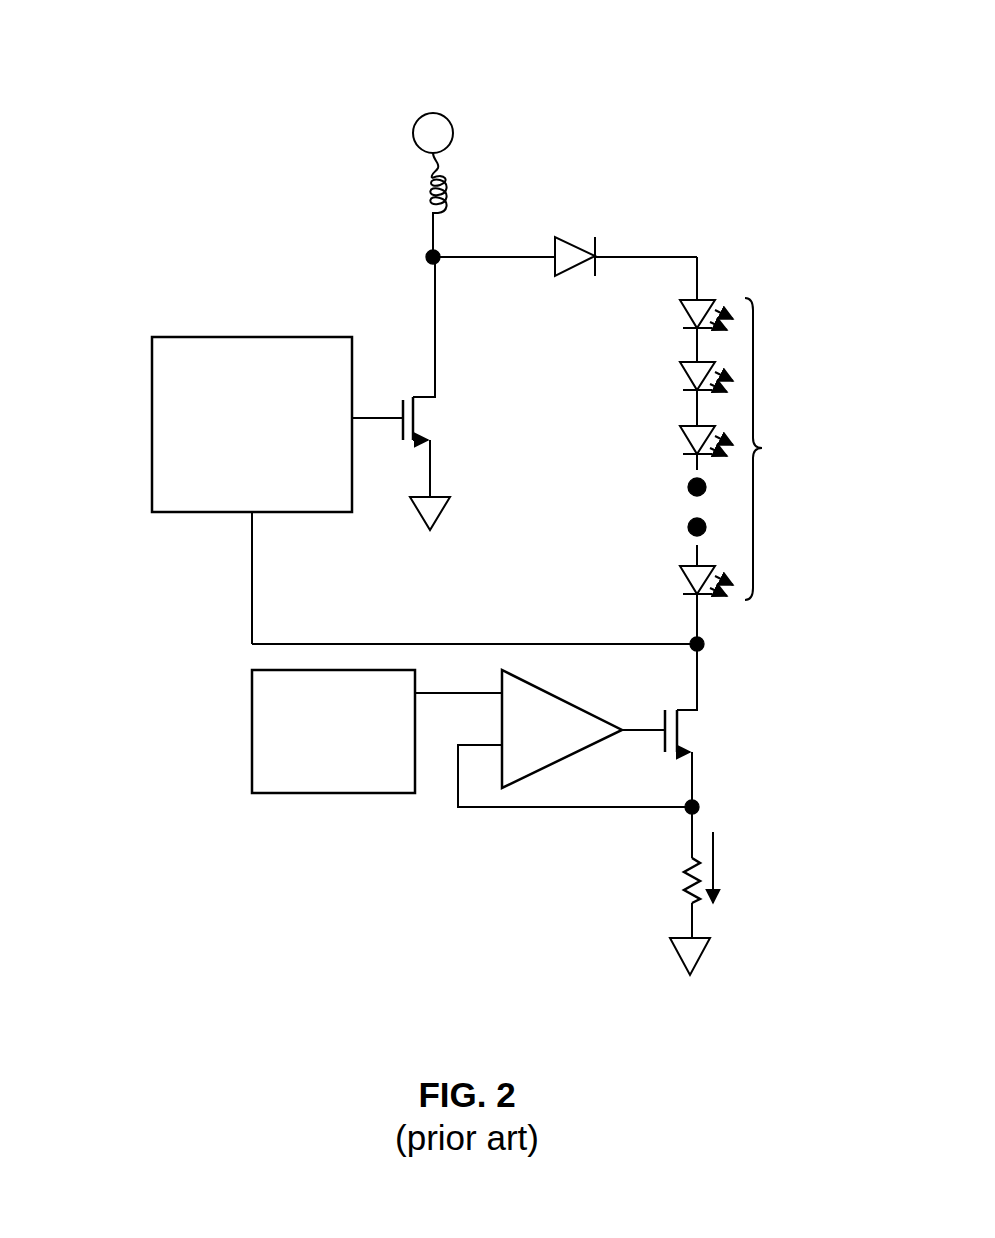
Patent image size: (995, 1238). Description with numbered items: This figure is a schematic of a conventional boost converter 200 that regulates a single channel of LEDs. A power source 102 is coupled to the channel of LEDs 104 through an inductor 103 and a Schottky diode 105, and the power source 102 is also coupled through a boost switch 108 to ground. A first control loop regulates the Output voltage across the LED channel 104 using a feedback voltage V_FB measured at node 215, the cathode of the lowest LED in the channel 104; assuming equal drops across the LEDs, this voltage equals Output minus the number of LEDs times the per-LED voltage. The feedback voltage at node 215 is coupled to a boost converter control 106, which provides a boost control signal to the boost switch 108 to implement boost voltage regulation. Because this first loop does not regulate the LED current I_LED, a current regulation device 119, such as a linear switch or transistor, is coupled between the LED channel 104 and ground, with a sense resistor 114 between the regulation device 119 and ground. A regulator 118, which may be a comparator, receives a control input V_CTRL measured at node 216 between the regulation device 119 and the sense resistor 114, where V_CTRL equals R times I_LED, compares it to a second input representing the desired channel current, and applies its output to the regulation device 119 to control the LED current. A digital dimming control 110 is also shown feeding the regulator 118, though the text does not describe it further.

The boost converter 200 is at (52, 30).
The power source 102 is at (453, 128).
The inductor 103 is at (448, 198).
The Schottky diode 105 is at (562, 237).
The boost converter control 106 is at (260, 337).
The boost switch 108 is at (448, 378).
The channel of LEDs 104 is at (762, 448).
The node 215 is at (704, 640).
The regulator 118 is at (547, 710).
The current regulation device 119 is at (690, 730).
The node 216 is at (700, 800).
The digital dimming control 110 is at (337, 782).
The sense resistor 114 is at (652, 872).